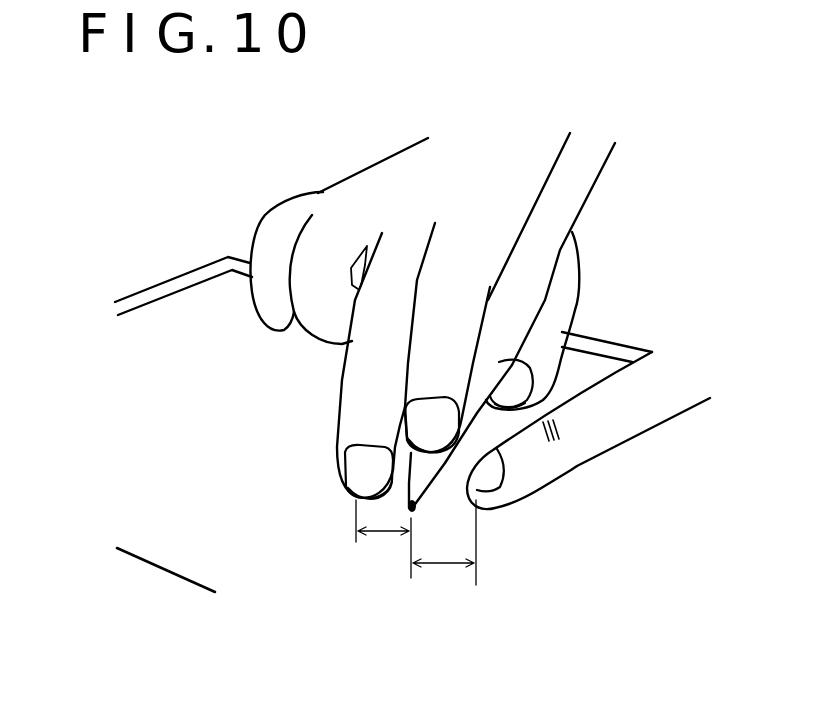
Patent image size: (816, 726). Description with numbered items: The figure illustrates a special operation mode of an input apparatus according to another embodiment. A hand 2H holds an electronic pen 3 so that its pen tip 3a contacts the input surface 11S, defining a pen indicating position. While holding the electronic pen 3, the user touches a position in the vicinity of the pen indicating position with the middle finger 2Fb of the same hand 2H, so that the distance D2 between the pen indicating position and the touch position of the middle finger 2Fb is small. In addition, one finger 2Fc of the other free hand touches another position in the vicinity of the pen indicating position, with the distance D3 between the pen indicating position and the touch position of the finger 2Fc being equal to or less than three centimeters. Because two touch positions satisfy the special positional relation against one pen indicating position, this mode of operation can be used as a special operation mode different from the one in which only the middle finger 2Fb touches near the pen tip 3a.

The hand 2H is at (395, 178).
The input surface 11S is at (178, 328).
The electronic pen 3 is at (568, 192).
The pen tip 3a is at (416, 508).
The middle finger 2Fb is at (354, 400).
The finger of the other free hand 2Fc is at (623, 432).
The distance between pen indicating position and middle finger touch position D2 is at (383, 539).
The distance between pen indicating position and free-hand finger touch position D3 is at (444, 552).